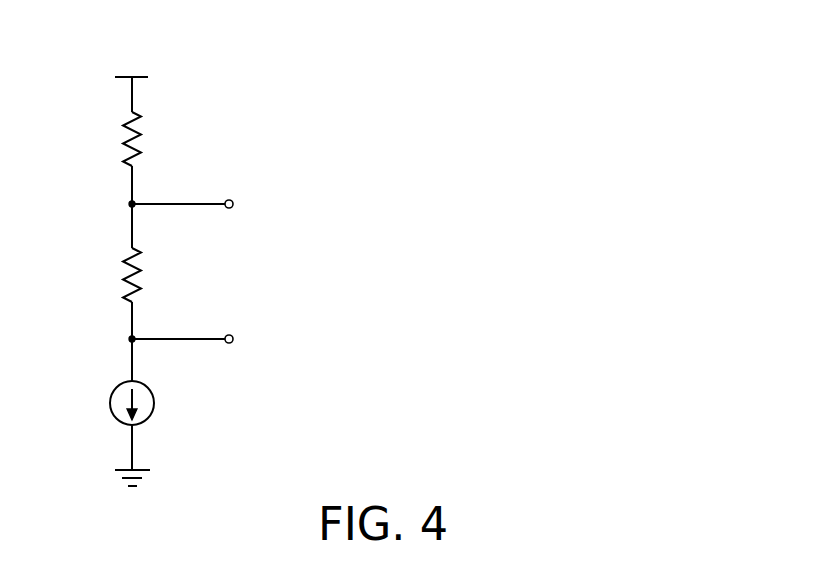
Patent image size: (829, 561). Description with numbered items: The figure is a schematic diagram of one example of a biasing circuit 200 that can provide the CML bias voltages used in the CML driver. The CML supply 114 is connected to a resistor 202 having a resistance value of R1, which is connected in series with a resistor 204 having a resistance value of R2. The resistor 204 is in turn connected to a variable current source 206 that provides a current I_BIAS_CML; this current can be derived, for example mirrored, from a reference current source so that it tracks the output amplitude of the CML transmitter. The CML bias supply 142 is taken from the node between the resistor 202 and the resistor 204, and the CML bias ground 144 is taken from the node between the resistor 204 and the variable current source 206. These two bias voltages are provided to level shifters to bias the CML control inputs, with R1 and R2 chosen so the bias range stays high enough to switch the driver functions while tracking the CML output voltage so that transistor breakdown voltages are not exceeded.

The CML supply 114 is at (187, 35).
The CML bias supply 142 is at (350, 179).
The CML bias ground 144 is at (350, 315).
The biasing circuit 200 is at (447, 87).
The resistor 202 is at (141, 128).
The resistor 204 is at (141, 263).
The variable current source 206 is at (110, 403).